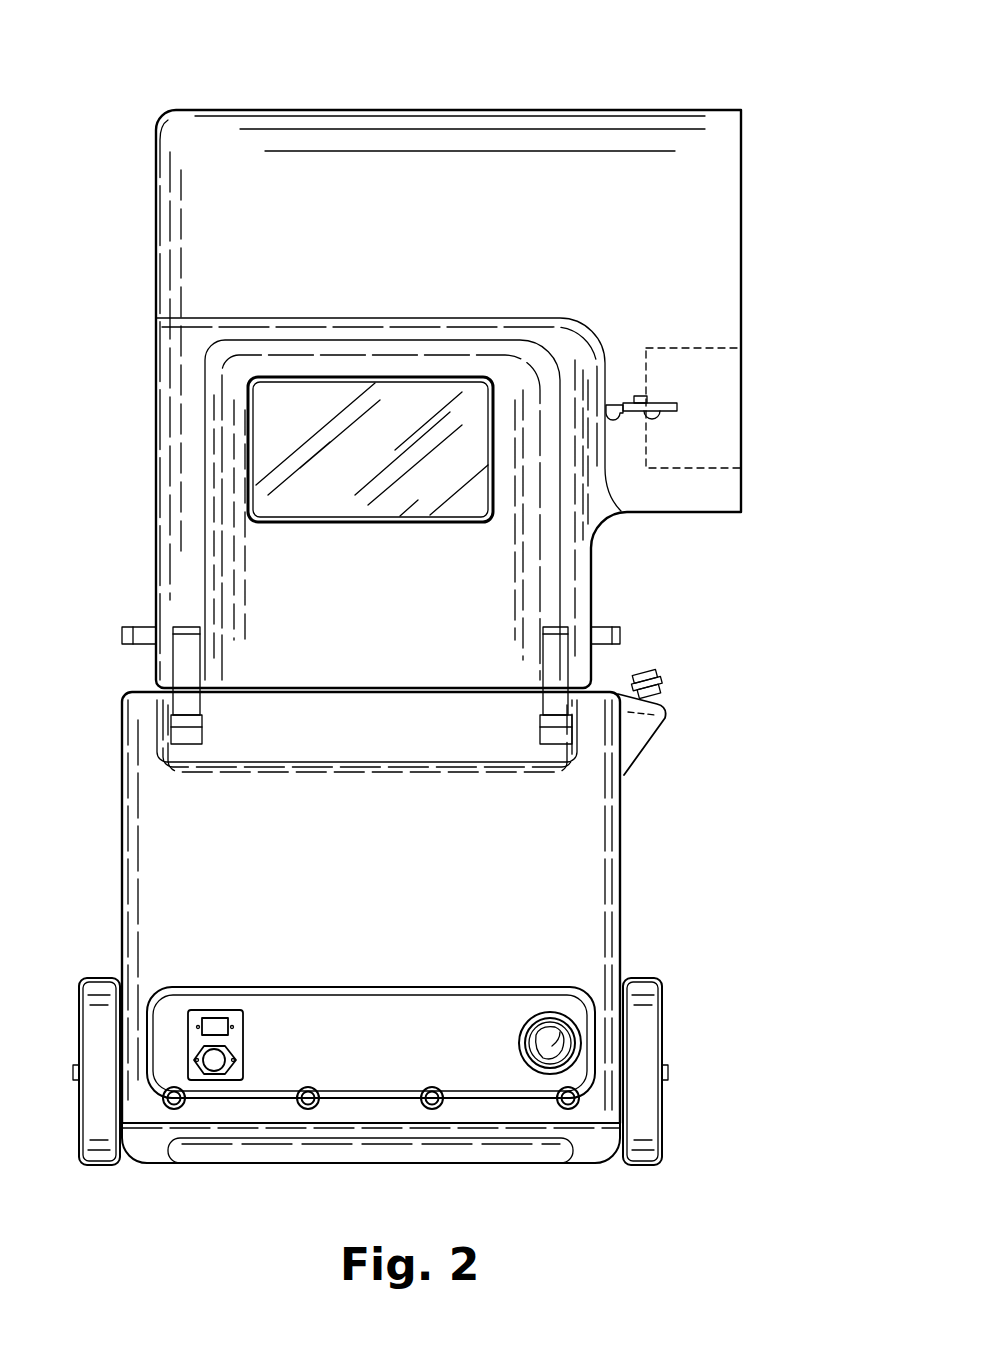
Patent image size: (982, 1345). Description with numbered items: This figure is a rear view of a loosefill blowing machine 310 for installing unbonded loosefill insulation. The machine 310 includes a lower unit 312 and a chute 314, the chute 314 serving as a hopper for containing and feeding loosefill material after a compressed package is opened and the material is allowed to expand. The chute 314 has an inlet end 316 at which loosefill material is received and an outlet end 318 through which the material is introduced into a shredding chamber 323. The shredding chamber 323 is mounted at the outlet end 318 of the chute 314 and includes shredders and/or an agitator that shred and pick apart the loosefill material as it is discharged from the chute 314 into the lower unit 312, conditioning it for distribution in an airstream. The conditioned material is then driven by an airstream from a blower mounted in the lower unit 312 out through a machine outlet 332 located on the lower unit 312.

The loosefill blowing machine 310 is at (100, 96).
The lower unit 312 is at (108, 884).
The chute 314 is at (145, 270).
The inlet end 316 is at (742, 207).
The outlet end 318 is at (463, 690).
The shredding chamber 323 is at (557, 897).
The machine outlet 332 is at (540, 1075).